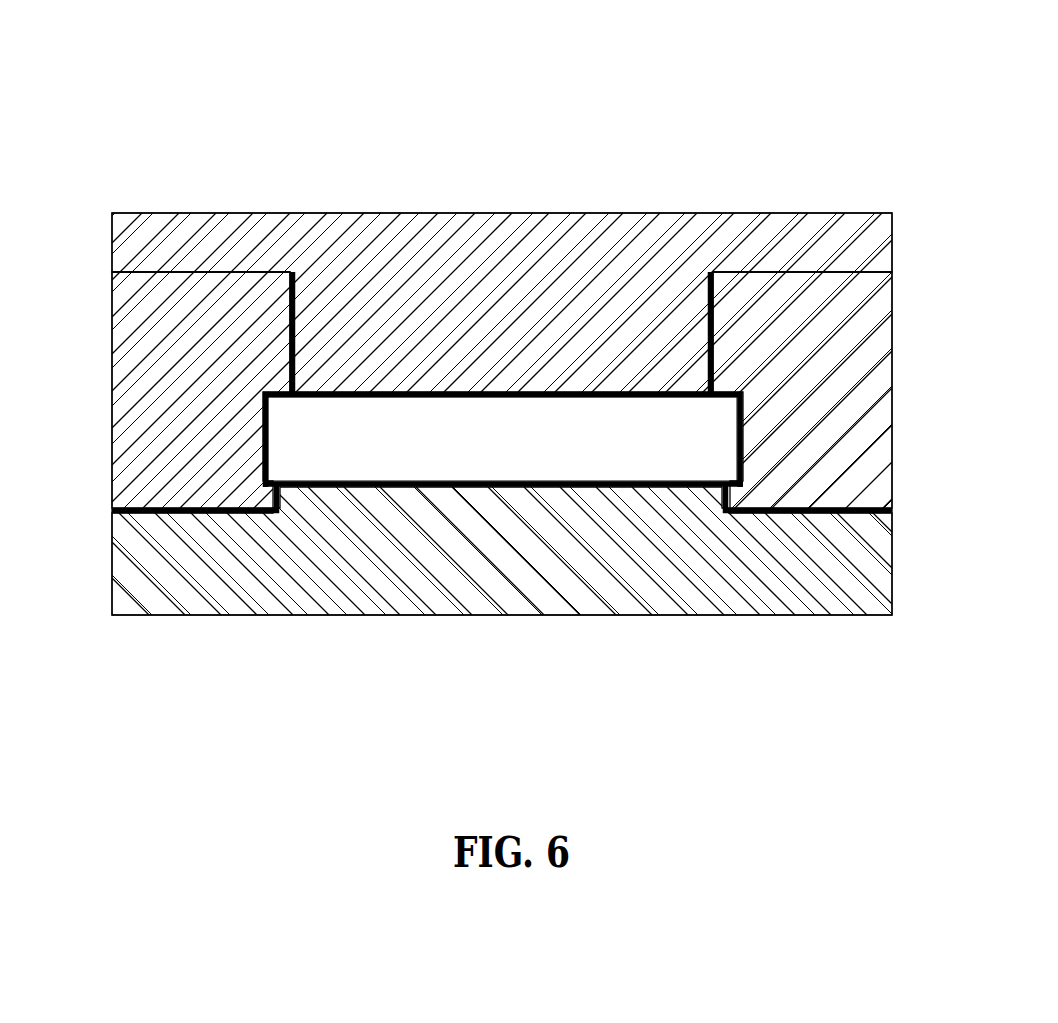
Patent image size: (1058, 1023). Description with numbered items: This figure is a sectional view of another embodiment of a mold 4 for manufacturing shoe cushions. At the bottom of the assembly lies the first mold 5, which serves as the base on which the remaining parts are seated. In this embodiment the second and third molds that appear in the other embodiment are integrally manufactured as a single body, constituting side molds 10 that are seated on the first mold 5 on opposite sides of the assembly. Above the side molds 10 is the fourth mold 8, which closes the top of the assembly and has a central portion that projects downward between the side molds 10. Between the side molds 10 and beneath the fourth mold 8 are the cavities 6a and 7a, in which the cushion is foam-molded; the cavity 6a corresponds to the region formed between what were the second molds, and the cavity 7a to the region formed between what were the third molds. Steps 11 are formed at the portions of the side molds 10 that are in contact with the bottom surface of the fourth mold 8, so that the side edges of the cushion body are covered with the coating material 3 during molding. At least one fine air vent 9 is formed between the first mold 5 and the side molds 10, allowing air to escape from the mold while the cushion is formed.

The mold 4 is at (327, 142).
The fourth mold 8 is at (533, 242).
The cavity 7a is at (708, 327).
The side molds 10 is at (142, 326).
The steps 11 is at (282, 398).
The coating material 3 is at (745, 440).
The fine air vent 9 is at (112, 510).
The cavity 6a is at (268, 448).
The first mold 5 is at (531, 615).